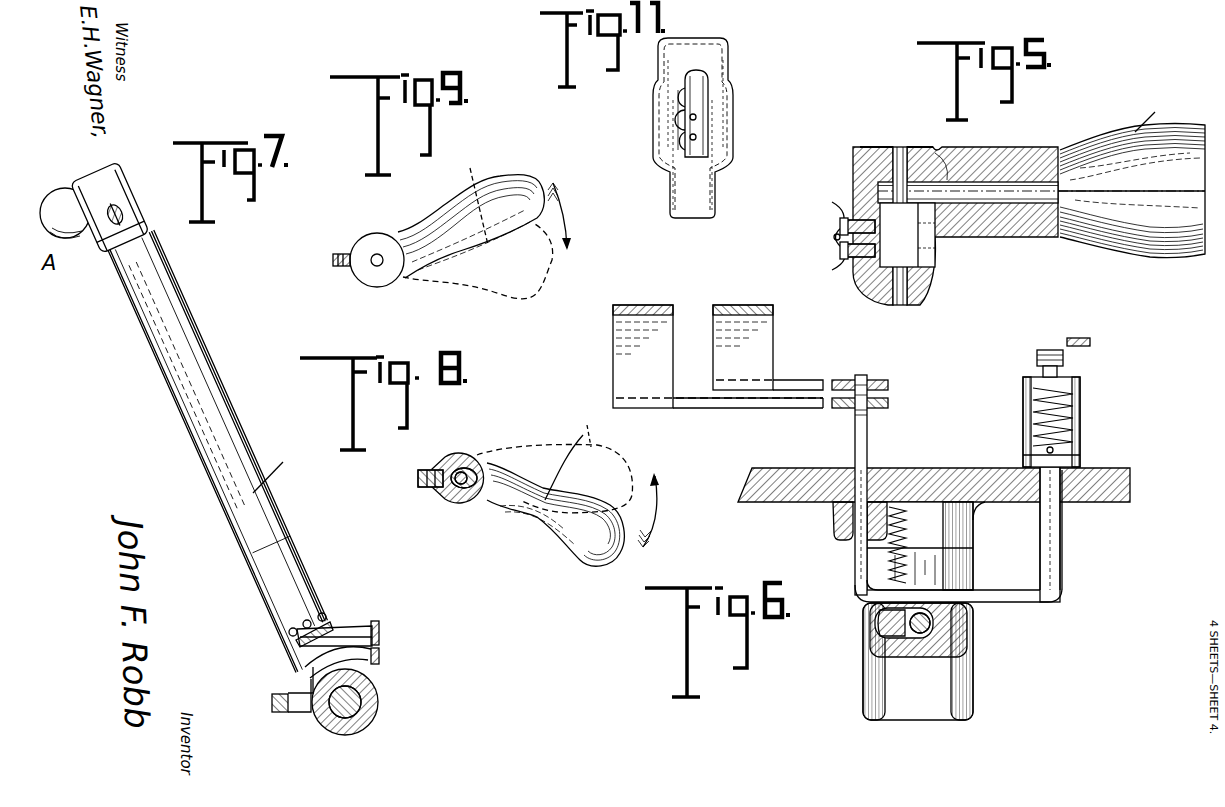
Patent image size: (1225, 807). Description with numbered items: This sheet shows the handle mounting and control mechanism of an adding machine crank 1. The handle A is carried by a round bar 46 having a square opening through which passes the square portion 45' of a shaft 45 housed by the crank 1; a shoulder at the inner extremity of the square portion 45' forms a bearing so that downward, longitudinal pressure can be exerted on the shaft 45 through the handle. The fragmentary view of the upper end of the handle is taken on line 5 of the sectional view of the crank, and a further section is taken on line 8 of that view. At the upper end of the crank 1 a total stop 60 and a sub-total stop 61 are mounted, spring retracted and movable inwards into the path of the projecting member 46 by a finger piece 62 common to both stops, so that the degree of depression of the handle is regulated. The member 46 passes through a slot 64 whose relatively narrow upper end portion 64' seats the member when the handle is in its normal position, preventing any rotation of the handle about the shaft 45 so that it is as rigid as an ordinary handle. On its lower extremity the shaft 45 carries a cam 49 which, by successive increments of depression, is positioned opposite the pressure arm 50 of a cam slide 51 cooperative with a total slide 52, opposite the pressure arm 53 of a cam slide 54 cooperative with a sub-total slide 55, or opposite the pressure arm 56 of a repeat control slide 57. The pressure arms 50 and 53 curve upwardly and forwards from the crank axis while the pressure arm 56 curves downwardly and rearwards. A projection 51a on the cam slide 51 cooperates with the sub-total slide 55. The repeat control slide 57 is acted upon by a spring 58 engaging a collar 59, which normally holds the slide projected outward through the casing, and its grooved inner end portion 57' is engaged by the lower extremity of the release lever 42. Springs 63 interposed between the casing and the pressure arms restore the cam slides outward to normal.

In FIG. 7, the crank 1 is at (269, 468).
In FIG. 9, the crank 1 is at (378, 277).
In FIG. 11, the crank 1 is at (687, 210).
In FIG. 5, the crank 1 is at (930, 295).
In FIG. 7, the section line 5— 5 is at (118, 225).
In FIG. 5, the section line 8— 8 is at (817, 225).
In FIG. 5, the release lever 42 is at (1091, 339).
In FIG. 5, the shaft 45 is at (883, 245).
In FIG. 6, the shaft 45 is at (950, 634).
In FIG. 8, the square portion 45' is at (455, 497).
In FIG. 5, the square portion 45' is at (915, 150).
In FIG. 8, the round bar 46 is at (479, 504).
In FIG. 5, the round bar 46 is at (987, 192).
In FIG. 7, the cam 49 is at (288, 634).
In FIG. 6, the cam 49 is at (893, 628).
In FIG. 7, the pressure arm 50 is at (357, 633).
In FIG. 7, the cam slide 51 is at (380, 632).
In FIG. 6, the projection 51a is at (866, 428).
In FIG. 6, the total slide 52 is at (617, 316).
In FIG. 7, the pressure arm 53 is at (318, 630).
In FIG. 7, the cam slide 54 is at (380, 656).
In FIG. 6, the sub-total slide 55 is at (762, 370).
In FIG. 7, the pressure arm 56 is at (300, 688).
In FIG. 6, the pressure arm 56 is at (983, 593).
In FIG. 7, the repeat control slide 57 is at (275, 721).
In FIG. 6, the repeat control slide 57 is at (934, 534).
In FIG. 6, the grooved inner end portion 57' is at (1085, 363).
In FIG. 6, the spring 58 is at (1075, 426).
In FIG. 6, the collar 59 is at (1065, 451).
In FIG. 8, the total stop 60 is at (447, 466).
In FIG. 11, the total stop 60 is at (690, 138).
In FIG. 5, the total stop 60 is at (840, 224).
In FIG. 11, the sub-total stop 61 is at (642, 130).
In FIG. 5, the sub-total stop 61 is at (832, 256).
In FIG. 7, the finger piece 62 is at (124, 222).
In FIG. 9, the finger piece 62 is at (332, 262).
In FIG. 8, the finger piece 62 is at (418, 481).
In FIG. 5, the finger piece 62 is at (843, 249).
In FIG. 6, the springs 63 is at (908, 548).
In FIG. 11, the slot 64 is at (725, 119).
In FIG. 5, the slot 64 is at (932, 247).
In FIG. 11, the upper end portion 64' is at (735, 104).
In FIG. 5, the upper end portion 64' is at (981, 151).